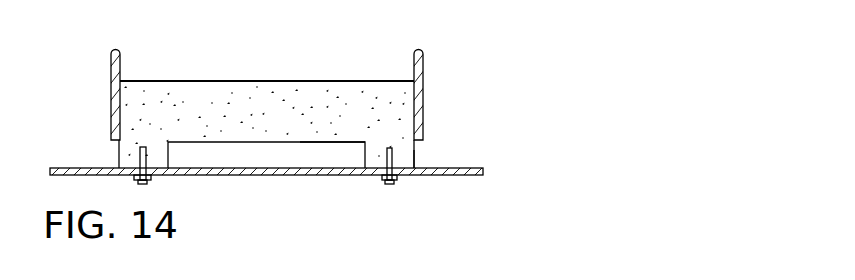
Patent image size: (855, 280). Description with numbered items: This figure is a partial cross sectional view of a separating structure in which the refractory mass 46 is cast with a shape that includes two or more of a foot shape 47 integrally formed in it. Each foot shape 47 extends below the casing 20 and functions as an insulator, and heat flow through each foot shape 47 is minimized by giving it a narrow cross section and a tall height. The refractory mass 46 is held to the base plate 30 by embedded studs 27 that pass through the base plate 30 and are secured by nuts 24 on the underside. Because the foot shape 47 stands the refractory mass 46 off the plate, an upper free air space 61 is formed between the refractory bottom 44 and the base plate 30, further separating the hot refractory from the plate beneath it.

The casing 20 is at (423, 80).
The nuts 24 is at (395, 180).
The embedded studs 27 is at (387, 153).
The base plate 30 is at (290, 153).
The refractory bottom 44 is at (307, 143).
The refractory mass 46 is at (225, 107).
The foot shape 47 is at (418, 160).
The upper free air space 61 is at (180, 158).